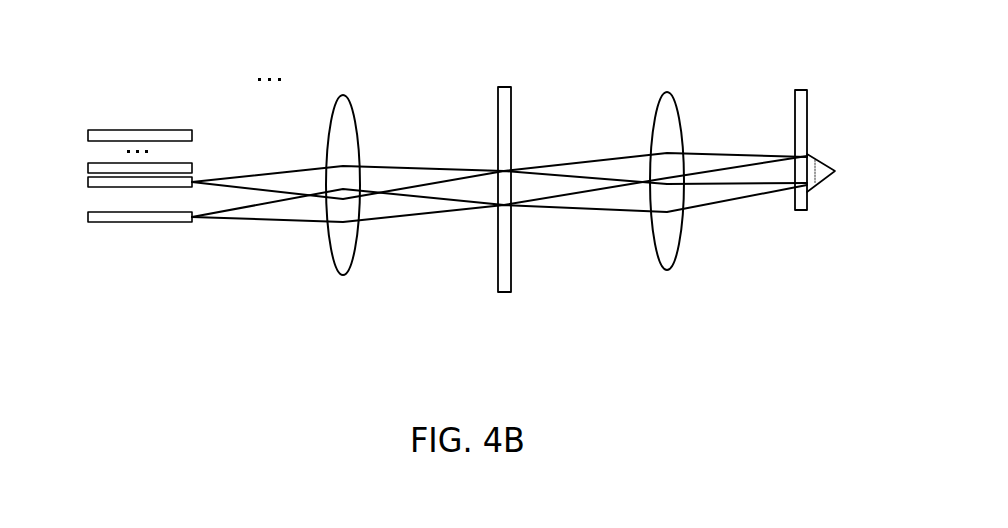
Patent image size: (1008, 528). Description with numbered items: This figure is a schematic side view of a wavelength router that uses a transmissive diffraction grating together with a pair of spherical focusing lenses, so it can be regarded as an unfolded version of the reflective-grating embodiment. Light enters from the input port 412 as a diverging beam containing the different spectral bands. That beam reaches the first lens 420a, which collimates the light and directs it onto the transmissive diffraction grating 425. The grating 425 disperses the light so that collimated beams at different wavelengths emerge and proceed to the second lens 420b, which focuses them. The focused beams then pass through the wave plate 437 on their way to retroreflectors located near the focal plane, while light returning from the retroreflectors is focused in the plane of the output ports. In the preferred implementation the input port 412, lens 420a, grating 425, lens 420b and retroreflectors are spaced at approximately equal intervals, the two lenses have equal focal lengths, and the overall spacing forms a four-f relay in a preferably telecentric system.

The input port 412 is at (195, 187).
The first lens 420a is at (360, 127).
The second lens 420b is at (684, 122).
The transmissive diffraction grating 425 is at (511, 98).
The wave plate 437 is at (807, 125).